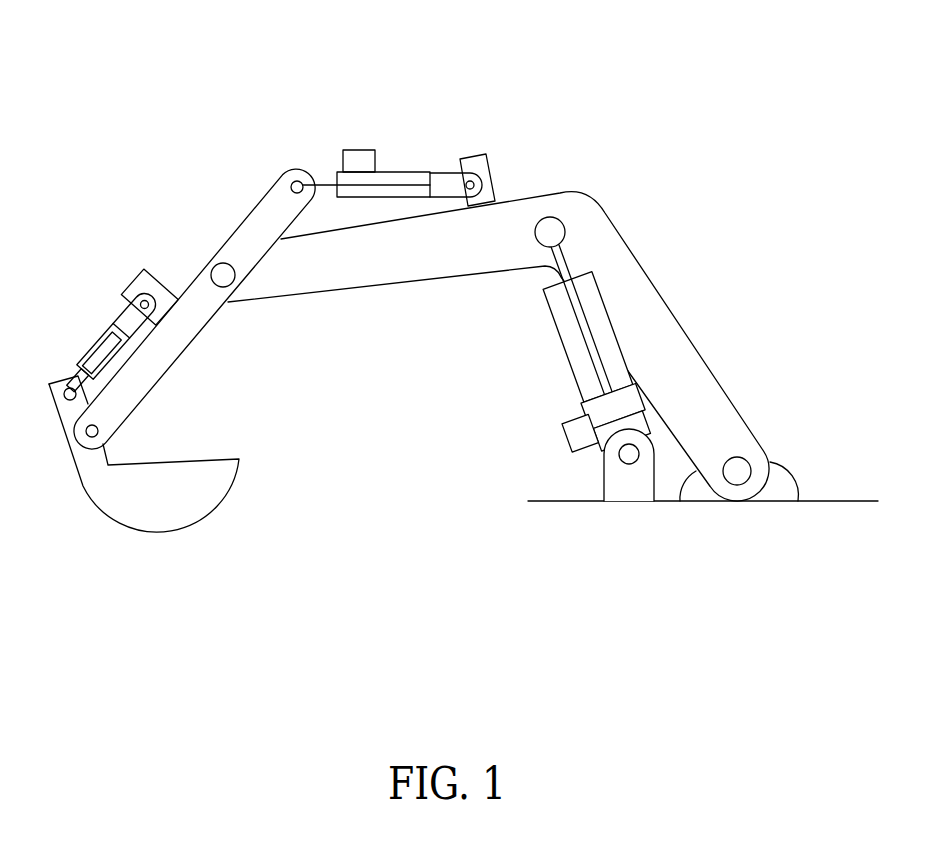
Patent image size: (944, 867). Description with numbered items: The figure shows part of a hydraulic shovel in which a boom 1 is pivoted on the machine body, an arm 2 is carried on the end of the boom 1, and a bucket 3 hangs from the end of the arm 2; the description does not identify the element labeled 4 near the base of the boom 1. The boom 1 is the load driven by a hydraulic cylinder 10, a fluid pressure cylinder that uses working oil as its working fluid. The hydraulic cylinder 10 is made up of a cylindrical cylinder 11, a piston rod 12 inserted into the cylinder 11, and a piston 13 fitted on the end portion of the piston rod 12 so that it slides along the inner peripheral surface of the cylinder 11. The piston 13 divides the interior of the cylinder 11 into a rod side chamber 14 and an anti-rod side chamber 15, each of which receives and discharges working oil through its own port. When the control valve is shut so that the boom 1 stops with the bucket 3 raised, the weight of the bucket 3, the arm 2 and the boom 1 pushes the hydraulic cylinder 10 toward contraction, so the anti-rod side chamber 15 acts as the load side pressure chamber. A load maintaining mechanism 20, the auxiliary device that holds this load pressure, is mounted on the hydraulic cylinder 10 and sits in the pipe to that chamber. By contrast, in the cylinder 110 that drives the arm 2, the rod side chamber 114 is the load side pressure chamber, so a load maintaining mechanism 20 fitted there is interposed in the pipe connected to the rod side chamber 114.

The boom 1 is at (570, 192).
The arm 2 is at (248, 205).
The bucket 3 is at (133, 531).
The boom pivot pin 4 is at (738, 486).
The hydraulic cylinder 10 is at (535, 390).
The cylinder 11 is at (548, 302).
The piston rod 12 is at (574, 316).
The piston 13 is at (598, 404).
The rod side chamber 14 is at (596, 298).
The anti-rod side chamber 15 is at (632, 418).
The load maintaining mechanism 20 is at (361, 151).
The cylinder 110 is at (436, 122).
The rod side chamber 114 is at (396, 181).